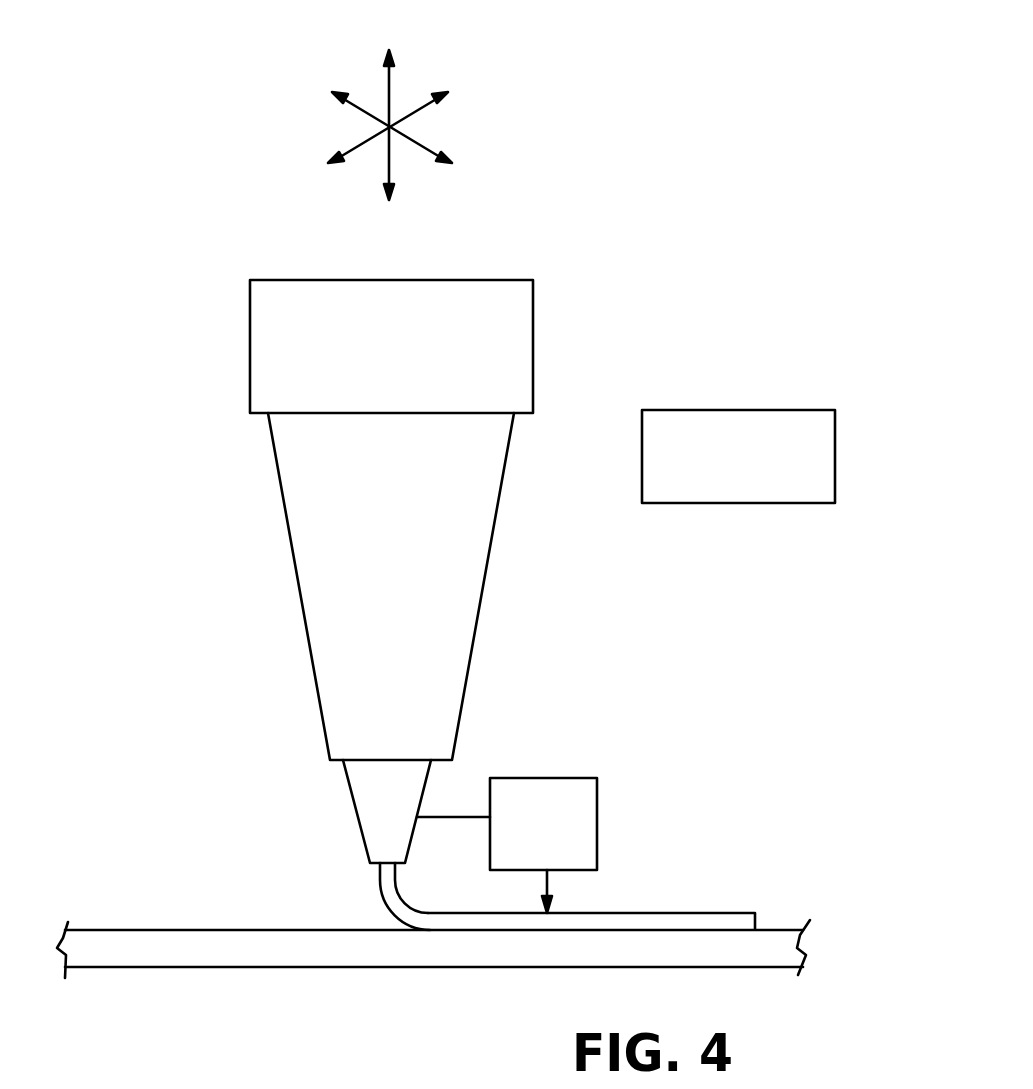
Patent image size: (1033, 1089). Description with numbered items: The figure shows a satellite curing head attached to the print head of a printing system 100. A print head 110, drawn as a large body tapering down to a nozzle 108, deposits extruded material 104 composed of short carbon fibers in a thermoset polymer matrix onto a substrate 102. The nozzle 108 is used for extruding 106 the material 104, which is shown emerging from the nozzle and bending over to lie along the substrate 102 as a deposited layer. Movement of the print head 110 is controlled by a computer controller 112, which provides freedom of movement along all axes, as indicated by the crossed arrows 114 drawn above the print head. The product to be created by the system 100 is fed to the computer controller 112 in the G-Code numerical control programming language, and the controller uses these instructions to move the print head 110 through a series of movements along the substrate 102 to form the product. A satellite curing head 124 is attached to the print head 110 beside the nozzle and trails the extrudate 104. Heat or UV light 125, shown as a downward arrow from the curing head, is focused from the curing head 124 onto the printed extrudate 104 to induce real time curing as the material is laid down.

The system 100 is at (626, 64).
The substrate 102 is at (115, 930).
The extruded material 104 is at (700, 912).
The extruding 106 is at (378, 875).
The nozzle 108 is at (357, 818).
The print head 110 is at (422, 522).
The computer controller 112 is at (735, 410).
The arrows 114 is at (390, 93).
The satellite curing head 124 is at (558, 778).
The UV light 125 is at (550, 885).